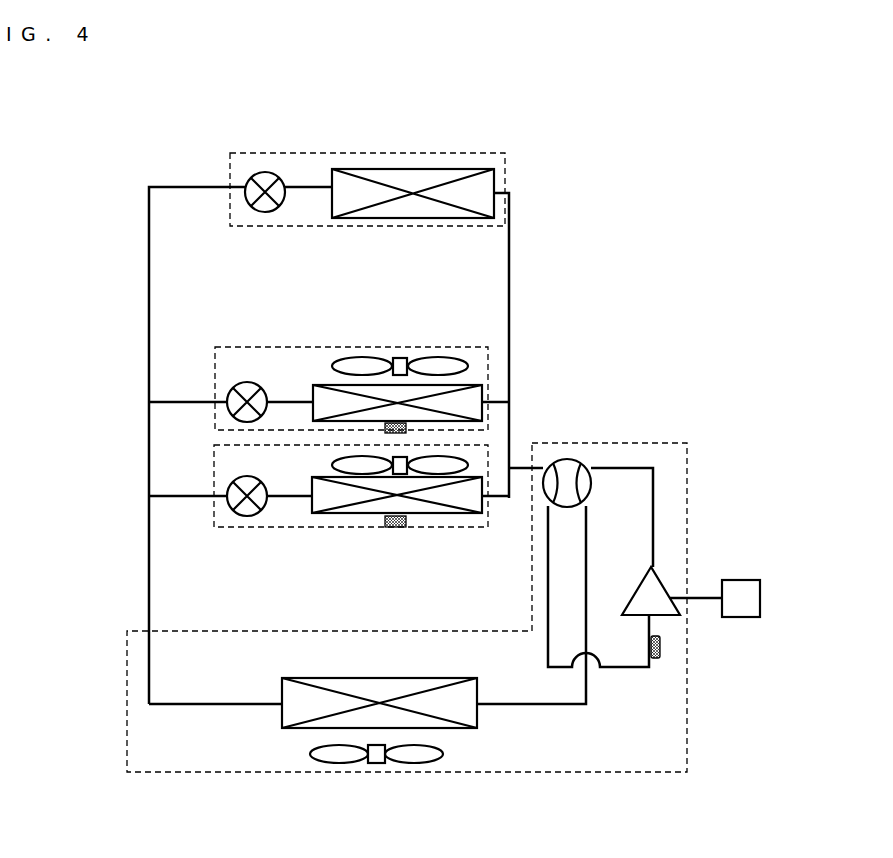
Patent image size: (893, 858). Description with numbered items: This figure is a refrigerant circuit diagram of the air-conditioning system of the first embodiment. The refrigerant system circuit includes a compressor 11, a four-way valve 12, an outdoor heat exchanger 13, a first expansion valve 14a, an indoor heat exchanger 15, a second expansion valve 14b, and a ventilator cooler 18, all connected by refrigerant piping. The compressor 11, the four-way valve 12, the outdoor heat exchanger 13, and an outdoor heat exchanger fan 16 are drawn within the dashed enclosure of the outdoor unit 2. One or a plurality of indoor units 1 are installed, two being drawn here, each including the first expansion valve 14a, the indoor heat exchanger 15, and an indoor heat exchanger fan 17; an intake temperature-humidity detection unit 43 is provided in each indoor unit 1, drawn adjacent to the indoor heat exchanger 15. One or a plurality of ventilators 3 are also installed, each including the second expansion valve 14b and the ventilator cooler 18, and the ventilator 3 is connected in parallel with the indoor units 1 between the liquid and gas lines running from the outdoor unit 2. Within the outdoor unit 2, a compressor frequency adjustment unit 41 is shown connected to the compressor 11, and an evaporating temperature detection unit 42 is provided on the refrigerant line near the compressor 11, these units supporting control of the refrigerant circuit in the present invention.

The indoor unit 1 is at (213, 432).
The outdoor unit 2 is at (683, 482).
The ventilator 3 is at (233, 217).
The compressor 11 is at (648, 586).
The four-way valve 12 is at (562, 458).
The outdoor heat exchanger 13 is at (470, 700).
The first expansion valve 14a is at (237, 480).
The second expansion valve 14b is at (262, 182).
The indoor heat exchanger 15 is at (327, 407).
The outdoor heat exchanger fan 16 is at (340, 747).
The indoor heat exchanger fan 17 is at (455, 465).
The ventilator cooler 18 is at (432, 182).
The compressor frequency adjustment unit 41 is at (742, 600).
The evaporating temperature detection unit 42 is at (652, 662).
The intake temperature-humidity detection unit 43 is at (393, 434).